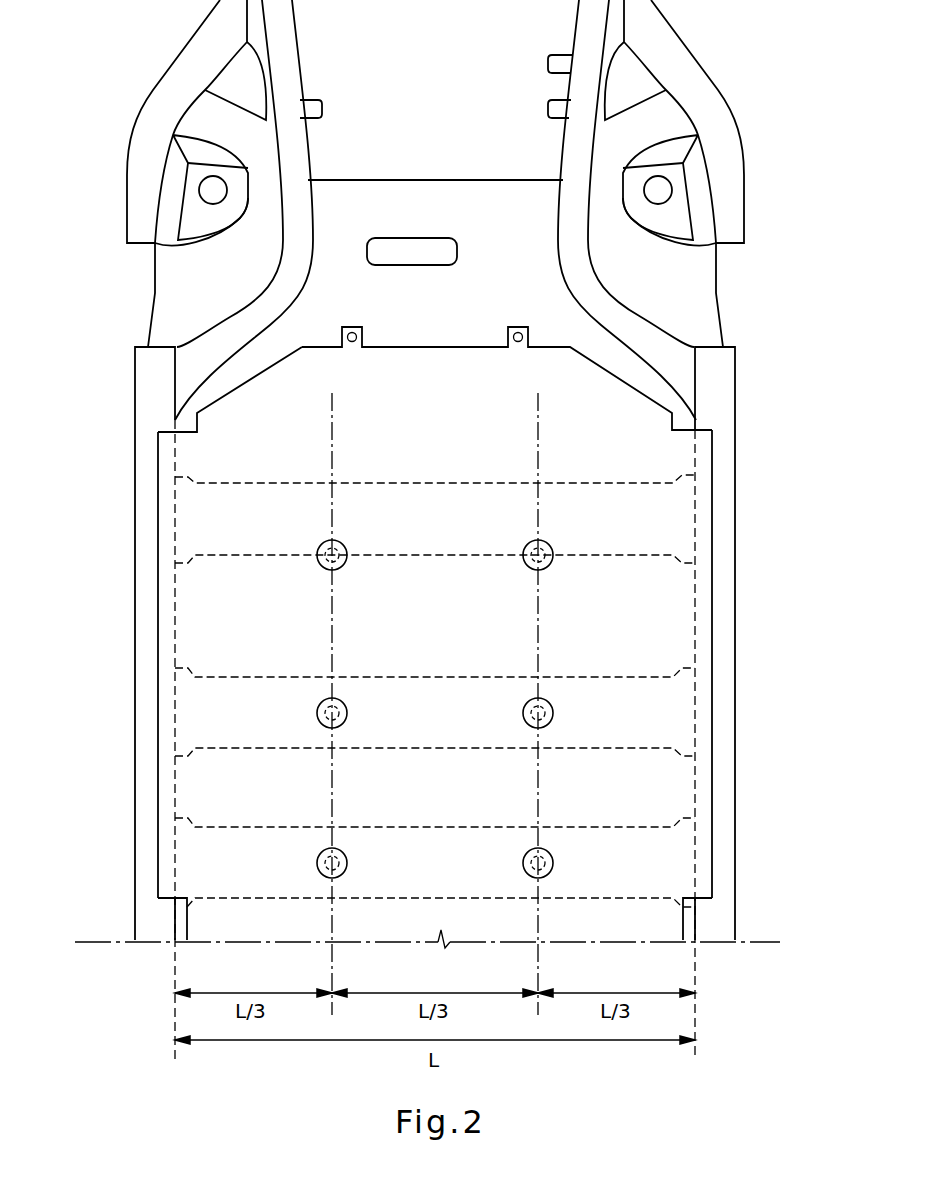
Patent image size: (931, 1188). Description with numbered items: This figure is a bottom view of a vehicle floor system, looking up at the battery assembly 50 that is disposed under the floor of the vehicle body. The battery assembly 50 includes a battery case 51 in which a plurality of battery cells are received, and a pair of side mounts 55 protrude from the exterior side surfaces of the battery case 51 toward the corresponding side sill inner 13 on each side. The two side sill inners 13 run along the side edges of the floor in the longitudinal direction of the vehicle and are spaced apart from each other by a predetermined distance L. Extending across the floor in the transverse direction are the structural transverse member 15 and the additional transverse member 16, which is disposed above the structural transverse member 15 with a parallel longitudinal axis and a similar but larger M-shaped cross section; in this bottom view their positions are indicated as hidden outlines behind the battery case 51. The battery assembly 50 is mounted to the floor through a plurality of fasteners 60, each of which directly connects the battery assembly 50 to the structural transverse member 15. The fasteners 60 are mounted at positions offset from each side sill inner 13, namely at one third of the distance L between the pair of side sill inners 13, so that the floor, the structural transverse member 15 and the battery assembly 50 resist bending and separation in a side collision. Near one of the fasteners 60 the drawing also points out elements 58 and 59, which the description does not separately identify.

The side sill inner 13 is at (135, 740).
The structural transverse member 15 is at (435, 667).
The additional transverse member 16 is at (444, 484).
The battery assembly 50 is at (613, 368).
The battery case 51 is at (653, 602).
The side mount 55 is at (167, 627).
The fastening boss 58 is at (318, 723).
The fastening hole 59 is at (338, 720).
The fastener 60 is at (345, 546).